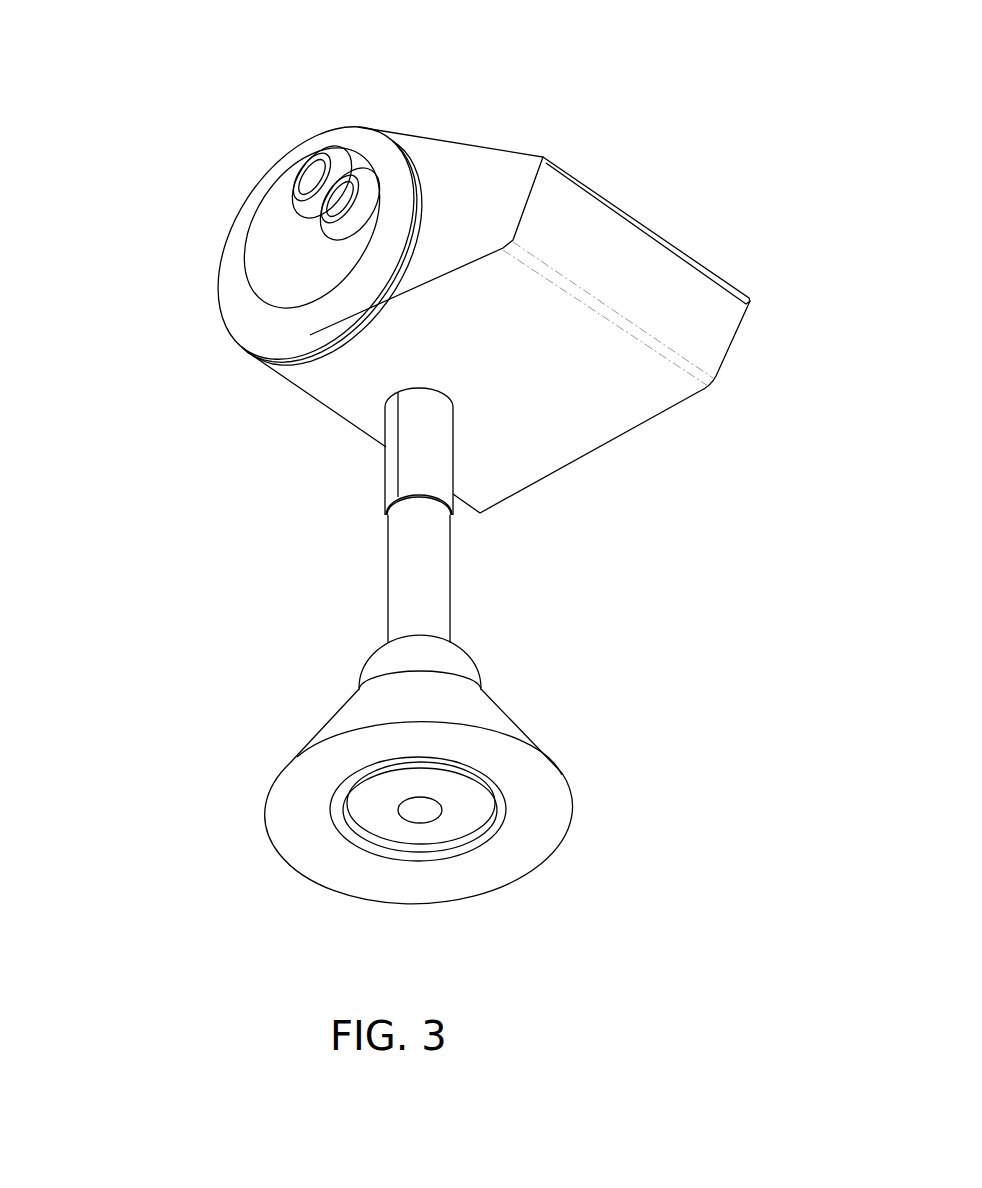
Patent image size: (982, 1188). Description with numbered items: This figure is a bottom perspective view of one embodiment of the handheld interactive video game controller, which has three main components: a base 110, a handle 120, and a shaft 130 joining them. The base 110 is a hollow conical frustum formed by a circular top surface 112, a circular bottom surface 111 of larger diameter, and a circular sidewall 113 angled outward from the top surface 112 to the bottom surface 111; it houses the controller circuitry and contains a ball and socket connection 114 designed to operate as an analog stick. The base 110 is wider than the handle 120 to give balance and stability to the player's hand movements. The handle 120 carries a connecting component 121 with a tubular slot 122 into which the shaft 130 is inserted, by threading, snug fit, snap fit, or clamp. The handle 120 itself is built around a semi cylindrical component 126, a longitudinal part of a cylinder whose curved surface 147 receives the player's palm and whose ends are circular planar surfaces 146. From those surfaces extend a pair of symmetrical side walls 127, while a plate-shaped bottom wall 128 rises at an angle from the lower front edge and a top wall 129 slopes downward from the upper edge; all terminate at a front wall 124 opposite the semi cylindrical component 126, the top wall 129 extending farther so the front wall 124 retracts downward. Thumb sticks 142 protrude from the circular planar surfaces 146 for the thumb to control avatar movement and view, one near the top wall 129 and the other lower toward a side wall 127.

The base 110 is at (228, 740).
The bottom surface 111 is at (548, 805).
The top surface 112 is at (452, 673).
The circular sidewall 113 is at (497, 718).
The ball and socket connection 114 is at (345, 665).
The handle 120 is at (545, 92).
The connecting component 121 is at (353, 450).
The tubular slot 122 is at (412, 485).
The front wall 124 is at (670, 292).
The semi cylindrical component 126 is at (220, 170).
The side walls 127 is at (468, 178).
The bottom wall 128 is at (617, 397).
The top wall 129 is at (630, 207).
The shaft 130 is at (337, 578).
The thumb sticks 142 is at (310, 143).
The circular planar surfaces 146 is at (263, 315).
The curved surface 147 is at (220, 268).